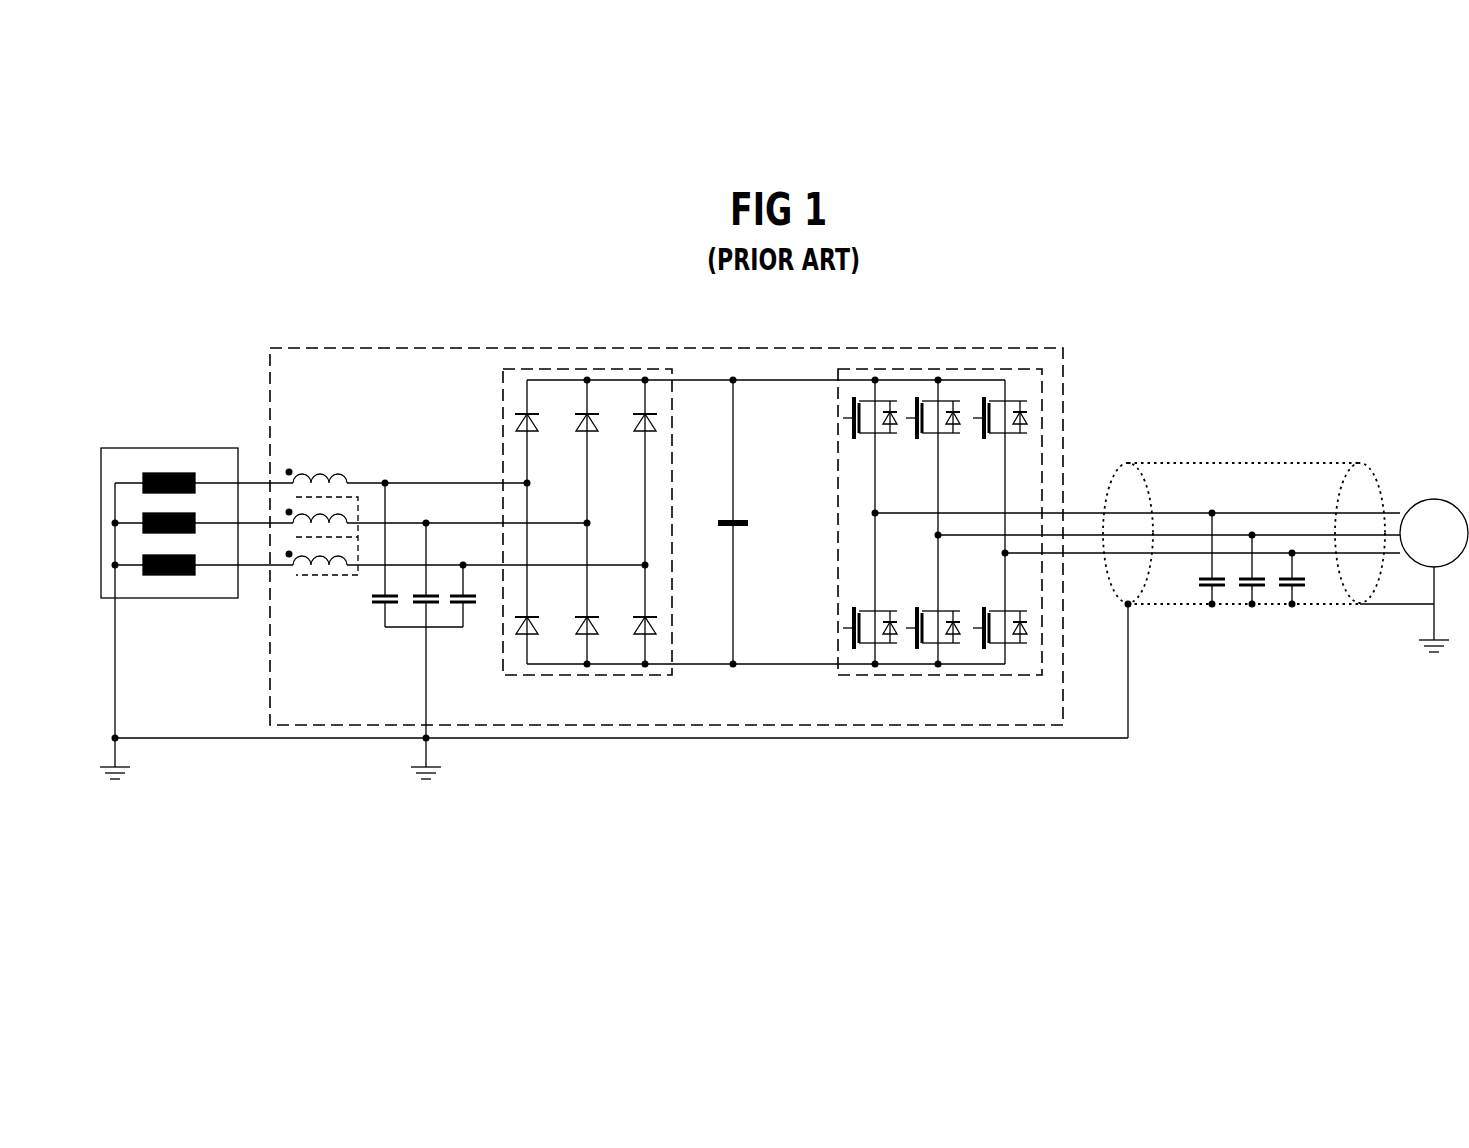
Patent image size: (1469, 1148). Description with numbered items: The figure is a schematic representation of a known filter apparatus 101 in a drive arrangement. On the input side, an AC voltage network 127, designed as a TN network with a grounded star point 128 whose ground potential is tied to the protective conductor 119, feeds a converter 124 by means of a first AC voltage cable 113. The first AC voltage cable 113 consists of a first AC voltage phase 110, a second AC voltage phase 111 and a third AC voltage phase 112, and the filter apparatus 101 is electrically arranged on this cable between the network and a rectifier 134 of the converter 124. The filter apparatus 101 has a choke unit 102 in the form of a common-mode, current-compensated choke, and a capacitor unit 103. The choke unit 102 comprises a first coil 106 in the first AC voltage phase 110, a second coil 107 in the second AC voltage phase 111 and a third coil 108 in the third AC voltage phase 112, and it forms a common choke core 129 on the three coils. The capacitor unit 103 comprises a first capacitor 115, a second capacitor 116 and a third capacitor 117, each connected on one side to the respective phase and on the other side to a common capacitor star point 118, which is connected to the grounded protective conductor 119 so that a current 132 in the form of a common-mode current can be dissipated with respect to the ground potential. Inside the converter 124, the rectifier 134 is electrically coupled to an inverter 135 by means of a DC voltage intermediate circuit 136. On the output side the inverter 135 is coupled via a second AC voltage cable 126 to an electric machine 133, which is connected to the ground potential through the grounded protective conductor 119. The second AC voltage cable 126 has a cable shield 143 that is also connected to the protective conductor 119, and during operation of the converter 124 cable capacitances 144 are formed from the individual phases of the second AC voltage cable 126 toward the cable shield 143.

The filter apparatus 101 is at (388, 453).
The choke unit 102 is at (327, 492).
The capacitor unit 103 is at (432, 460).
The first coil 106 is at (320, 470).
The second coil 107 is at (290, 513).
The third coil 108 is at (337, 575).
The first AC voltage phase 110 is at (255, 483).
The second AC voltage phase 111 is at (253, 525).
The third AC voltage phase 112 is at (282, 567).
The first AC voltage cable 113 is at (227, 456).
The first capacitor 115 is at (385, 592).
The second capacitor 116 is at (426, 592).
The third capacitor 117 is at (463, 592).
The capacitor star point 118 is at (430, 628).
The grounded protective conductor 119 is at (573, 740).
The converter 124 is at (483, 348).
The second AC voltage cable 126 is at (1070, 513).
The AC voltage network 127 is at (125, 448).
The grounded star point 128 is at (131, 577).
The common choke core 129 is at (303, 577).
The current 132 is at (418, 696).
The electric machine 133 is at (1437, 499).
The rectifier 134 is at (608, 369).
The inverter 135 is at (928, 369).
The DC voltage intermediate circuit 136 is at (785, 380).
The cable shield 143 is at (1253, 463).
The cable capacitances 144 is at (1292, 606).